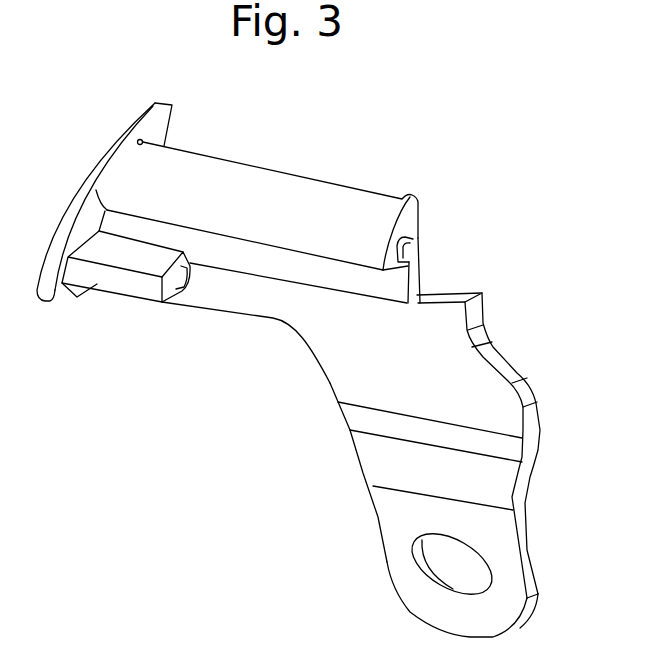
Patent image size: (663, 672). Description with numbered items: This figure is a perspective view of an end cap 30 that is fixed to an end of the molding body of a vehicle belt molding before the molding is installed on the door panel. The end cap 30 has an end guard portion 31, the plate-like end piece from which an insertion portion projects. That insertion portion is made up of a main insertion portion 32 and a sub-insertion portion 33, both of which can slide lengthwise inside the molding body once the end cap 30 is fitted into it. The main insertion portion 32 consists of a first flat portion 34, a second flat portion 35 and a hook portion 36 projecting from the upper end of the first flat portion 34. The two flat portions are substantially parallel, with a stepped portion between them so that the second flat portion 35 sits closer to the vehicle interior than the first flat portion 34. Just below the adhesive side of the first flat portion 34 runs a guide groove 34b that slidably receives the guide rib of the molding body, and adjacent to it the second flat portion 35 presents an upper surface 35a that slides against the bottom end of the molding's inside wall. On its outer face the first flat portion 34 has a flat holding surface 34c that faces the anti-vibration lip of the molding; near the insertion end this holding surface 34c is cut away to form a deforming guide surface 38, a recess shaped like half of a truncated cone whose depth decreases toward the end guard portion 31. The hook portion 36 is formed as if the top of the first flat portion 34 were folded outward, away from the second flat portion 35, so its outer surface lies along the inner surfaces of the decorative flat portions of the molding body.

The end cap 30 is at (344, 160).
The end guard portion 31 is at (102, 153).
The main insertion portion 32 is at (321, 421).
The sub-insertion portion 33 is at (120, 283).
The first flat portion 34 is at (368, 311).
The guide groove 34b is at (472, 254).
The holding surface 34c is at (465, 319).
The second flat portion 35 is at (400, 449).
The upper surface 35a is at (458, 289).
The hook portion 36 is at (243, 222).
The deforming guide surface 38 is at (420, 236).